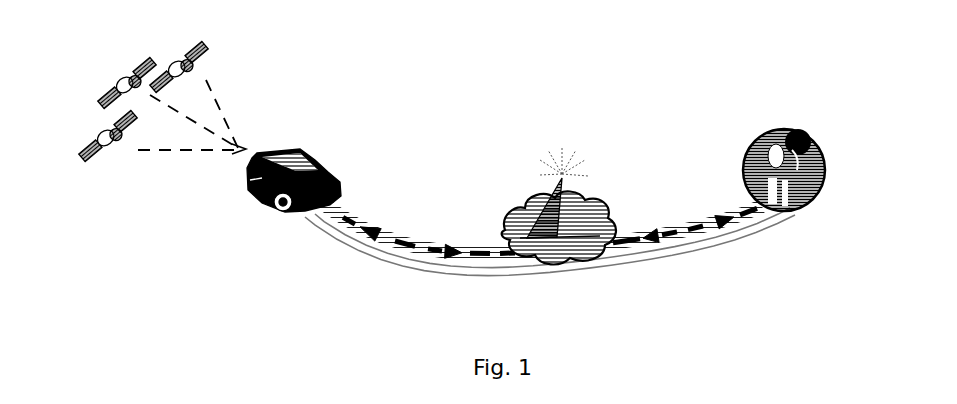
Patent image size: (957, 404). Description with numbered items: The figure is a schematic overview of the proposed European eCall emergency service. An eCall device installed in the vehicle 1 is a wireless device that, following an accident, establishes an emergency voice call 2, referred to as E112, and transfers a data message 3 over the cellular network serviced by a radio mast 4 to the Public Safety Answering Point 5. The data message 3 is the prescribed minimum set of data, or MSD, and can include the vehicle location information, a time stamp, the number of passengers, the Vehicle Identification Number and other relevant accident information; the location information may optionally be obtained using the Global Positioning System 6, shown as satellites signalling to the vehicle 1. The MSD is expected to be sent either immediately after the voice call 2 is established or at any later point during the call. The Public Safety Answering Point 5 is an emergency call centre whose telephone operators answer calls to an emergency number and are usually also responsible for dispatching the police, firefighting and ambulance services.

The vehicle 1 is at (317, 157).
The emergency voice call 2 is at (718, 217).
The data message 3 is at (648, 267).
The radio mast 4 is at (550, 141).
The Public Safety Answering Point 5 is at (773, 127).
The Global Positioning System 6 is at (170, 34).